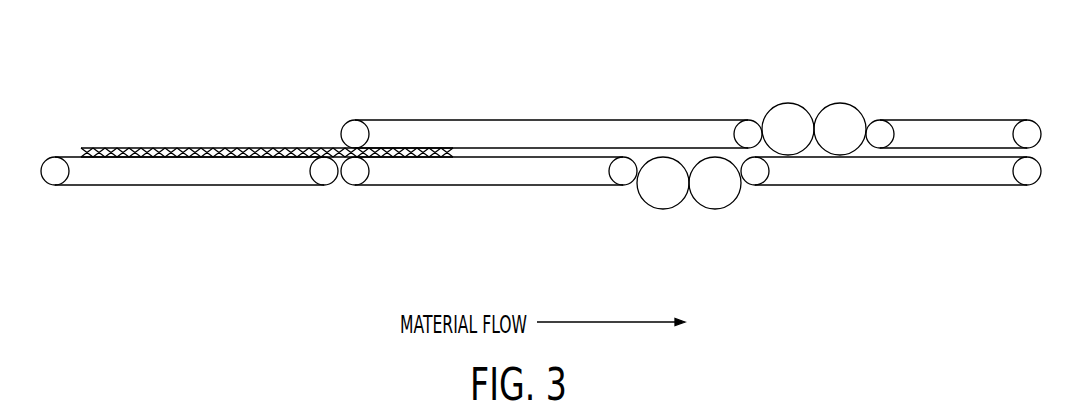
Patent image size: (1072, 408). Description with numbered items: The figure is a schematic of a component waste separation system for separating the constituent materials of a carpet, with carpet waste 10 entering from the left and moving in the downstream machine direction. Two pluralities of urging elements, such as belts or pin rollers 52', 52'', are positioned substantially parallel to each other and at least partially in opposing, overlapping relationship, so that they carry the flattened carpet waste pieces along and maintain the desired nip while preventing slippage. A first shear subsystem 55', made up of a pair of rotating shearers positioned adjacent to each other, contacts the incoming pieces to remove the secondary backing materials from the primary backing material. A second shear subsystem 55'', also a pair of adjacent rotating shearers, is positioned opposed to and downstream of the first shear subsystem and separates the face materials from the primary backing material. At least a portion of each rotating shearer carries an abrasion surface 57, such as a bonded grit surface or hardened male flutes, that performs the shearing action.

The carpet waste 10 is at (220, 139).
The plurality of urging elements 52' is at (691, 101).
The plurality of urging elements 52'' is at (541, 206).
The first shear subsystem 55' is at (676, 217).
The second shear subsystem 55'' is at (815, 97).
The abrasion surface 57 is at (815, 87).